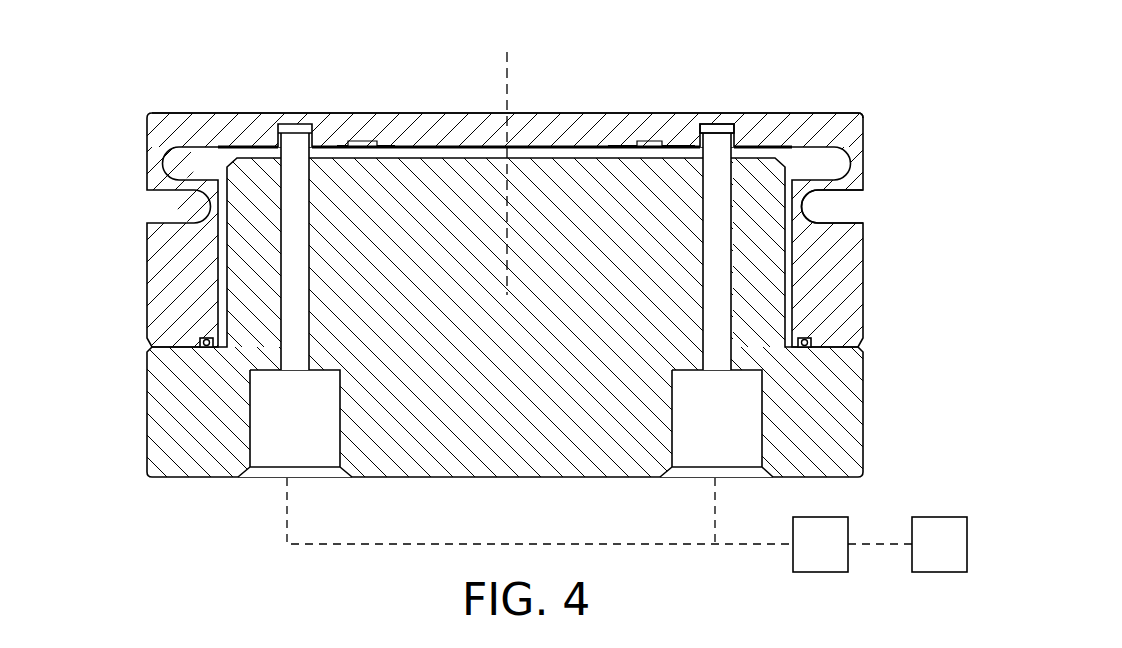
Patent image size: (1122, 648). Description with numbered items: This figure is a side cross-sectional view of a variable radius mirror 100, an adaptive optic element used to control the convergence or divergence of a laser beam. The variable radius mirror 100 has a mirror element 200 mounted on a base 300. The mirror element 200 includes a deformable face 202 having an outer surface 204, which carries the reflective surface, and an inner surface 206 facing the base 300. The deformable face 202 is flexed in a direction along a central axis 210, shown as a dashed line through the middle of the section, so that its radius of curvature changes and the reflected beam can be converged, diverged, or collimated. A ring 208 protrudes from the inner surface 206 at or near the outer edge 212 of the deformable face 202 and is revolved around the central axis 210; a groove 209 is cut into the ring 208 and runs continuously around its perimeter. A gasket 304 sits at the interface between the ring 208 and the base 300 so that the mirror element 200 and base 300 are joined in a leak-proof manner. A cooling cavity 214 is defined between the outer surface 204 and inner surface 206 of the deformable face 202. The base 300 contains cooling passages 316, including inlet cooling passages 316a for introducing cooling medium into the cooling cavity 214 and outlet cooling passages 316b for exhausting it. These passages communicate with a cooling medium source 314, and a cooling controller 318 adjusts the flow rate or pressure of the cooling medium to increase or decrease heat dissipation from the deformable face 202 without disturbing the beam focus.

The variable radius mirror 100 is at (118, 82).
The mirror element 200 is at (862, 92).
The deformable face 202 is at (246, 114).
The outer surface 204 is at (427, 113).
The inner surface 206 is at (172, 150).
The ring 208 is at (845, 286).
The groove 209 is at (838, 205).
The central axis 210 is at (507, 50).
The outer edge 212 is at (862, 113).
The cooling cavity 214 is at (722, 128).
The base 300 is at (878, 415).
The gasket 304 is at (200, 343).
The cooling medium source 314 is at (800, 555).
The cooling passages 316 is at (309, 258).
The inlet cooling passages 316a is at (290, 437).
The outlet cooling passages 316b is at (728, 437).
The cooling controller 318 is at (920, 555).